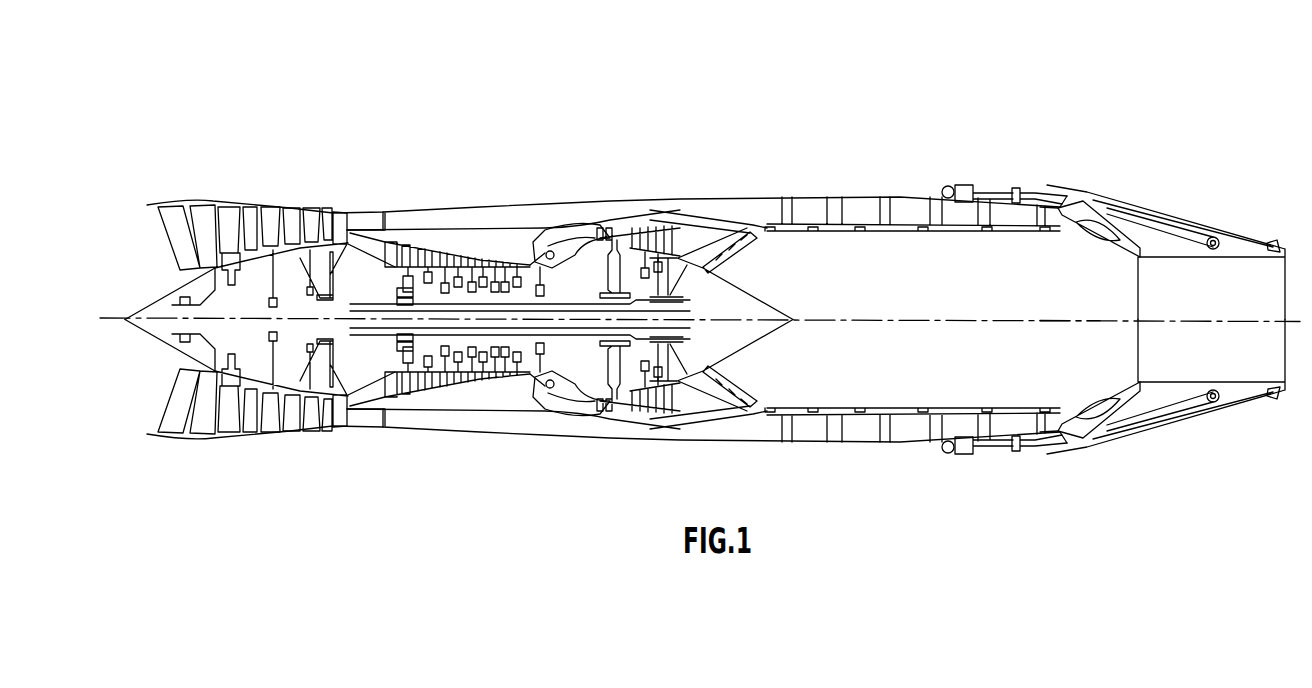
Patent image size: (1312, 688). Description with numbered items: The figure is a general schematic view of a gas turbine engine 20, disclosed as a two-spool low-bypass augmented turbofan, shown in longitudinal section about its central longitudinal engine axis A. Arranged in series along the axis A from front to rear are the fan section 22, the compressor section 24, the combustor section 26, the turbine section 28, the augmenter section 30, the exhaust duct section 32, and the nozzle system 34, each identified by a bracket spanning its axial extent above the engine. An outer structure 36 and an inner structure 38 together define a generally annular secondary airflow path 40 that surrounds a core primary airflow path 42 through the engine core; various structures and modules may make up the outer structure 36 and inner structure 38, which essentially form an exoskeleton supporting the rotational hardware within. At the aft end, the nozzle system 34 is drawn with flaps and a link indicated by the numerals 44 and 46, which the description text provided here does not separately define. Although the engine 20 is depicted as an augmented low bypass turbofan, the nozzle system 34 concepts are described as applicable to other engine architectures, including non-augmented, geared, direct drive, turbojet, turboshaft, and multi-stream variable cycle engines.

The gas turbine engine 20 is at (975, 43).
The fan section 22 is at (345, 123).
The compressor section 24 is at (545, 123).
The combustor section 26 is at (610, 123).
The turbine section 28 is at (680, 123).
The augmenter section 30 is at (805, 123).
The exhaust duct section 32 is at (1037, 123).
The nozzle system 34 is at (1283, 123).
The outer structure 36 is at (638, 450).
The inner structure 38 is at (517, 402).
The secondary airflow path 40 is at (413, 420).
The core primary airflow path 42 is at (358, 402).
The convergent flap 44 is at (1097, 228).
The divergent flap 46 is at (1227, 252).
The central longitudinal engine axis A is at (1062, 323).